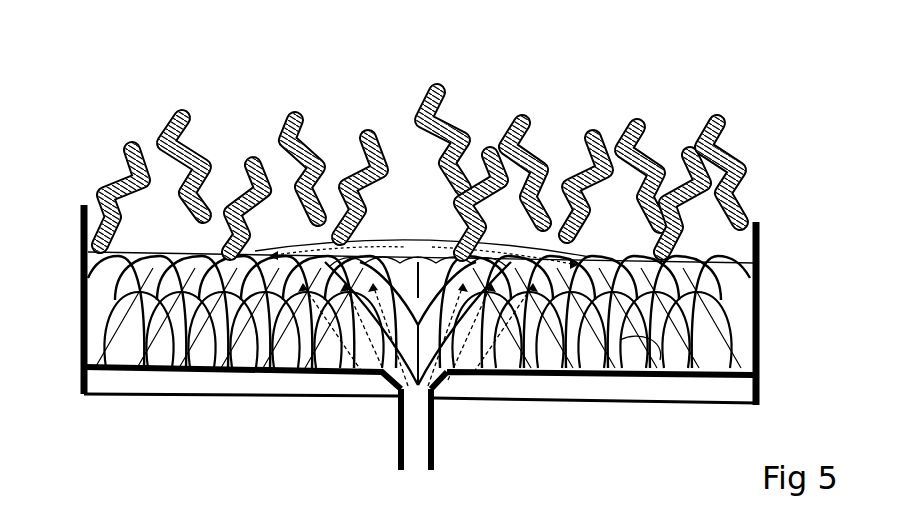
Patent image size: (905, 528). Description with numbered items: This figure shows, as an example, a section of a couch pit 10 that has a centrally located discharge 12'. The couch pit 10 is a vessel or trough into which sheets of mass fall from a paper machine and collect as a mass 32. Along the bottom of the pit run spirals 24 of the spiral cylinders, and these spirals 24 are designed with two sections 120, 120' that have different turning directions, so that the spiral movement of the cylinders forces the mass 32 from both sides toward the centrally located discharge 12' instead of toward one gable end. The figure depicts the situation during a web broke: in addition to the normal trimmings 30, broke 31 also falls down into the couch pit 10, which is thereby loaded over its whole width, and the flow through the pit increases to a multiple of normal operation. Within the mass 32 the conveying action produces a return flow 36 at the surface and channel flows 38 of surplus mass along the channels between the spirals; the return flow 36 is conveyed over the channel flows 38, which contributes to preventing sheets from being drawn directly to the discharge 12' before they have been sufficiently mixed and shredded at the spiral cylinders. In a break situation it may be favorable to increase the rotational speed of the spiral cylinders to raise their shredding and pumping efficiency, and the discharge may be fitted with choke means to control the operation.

The couch pit 10 is at (82, 214).
The centrally located discharge 12' is at (382, 437).
The spiral section 120 is at (381, 255).
The spiral section 120' is at (643, 412).
The spirals 24 is at (100, 284).
The trimmings 30 is at (118, 178).
The broke 31 is at (253, 165).
The mass 32 is at (215, 358).
The return flow 36 is at (257, 363).
The channel flows 38 is at (315, 360).